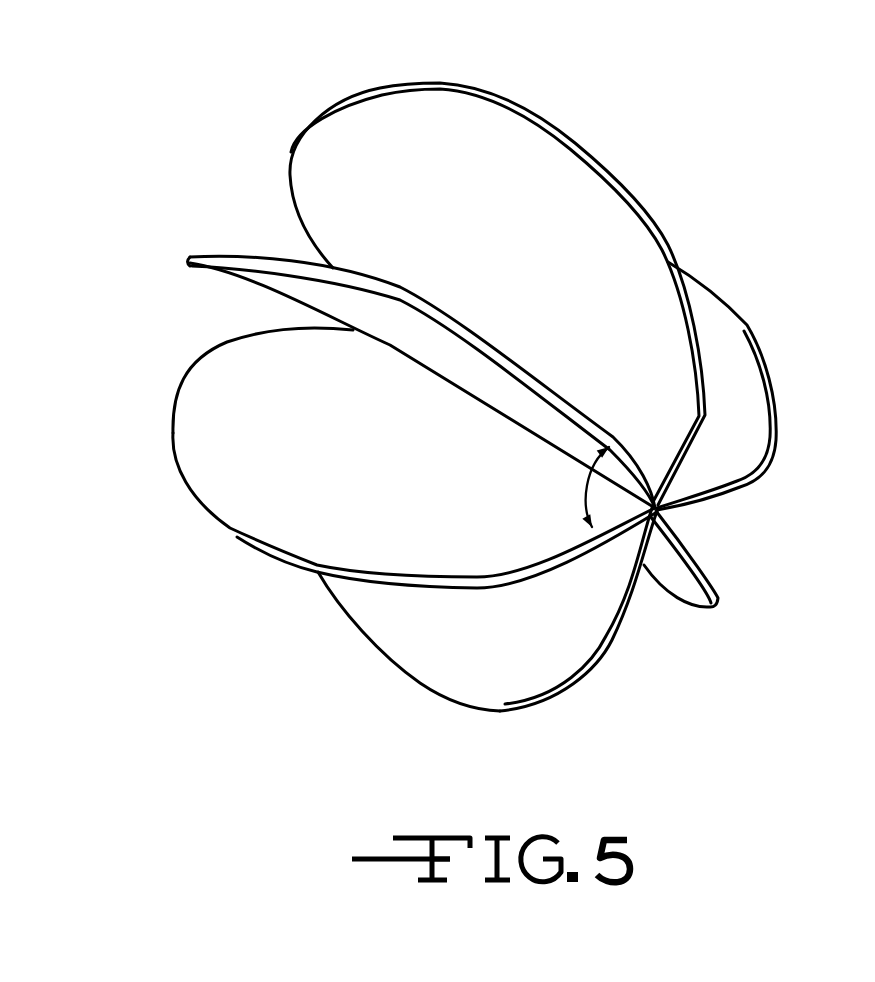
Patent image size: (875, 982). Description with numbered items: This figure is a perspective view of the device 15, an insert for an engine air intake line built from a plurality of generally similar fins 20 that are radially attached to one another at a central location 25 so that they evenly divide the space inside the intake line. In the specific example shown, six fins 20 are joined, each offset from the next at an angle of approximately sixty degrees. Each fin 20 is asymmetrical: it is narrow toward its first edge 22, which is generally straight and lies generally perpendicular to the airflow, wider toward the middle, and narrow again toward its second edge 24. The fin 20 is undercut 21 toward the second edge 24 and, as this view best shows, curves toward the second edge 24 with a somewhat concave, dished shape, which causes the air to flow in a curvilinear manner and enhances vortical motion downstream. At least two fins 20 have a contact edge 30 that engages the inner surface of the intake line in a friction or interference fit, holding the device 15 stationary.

The device 15 is at (800, 151).
The fin 20 is at (187, 482).
The undercut 21 is at (305, 236).
The first edge 22 is at (616, 624).
The second edge 24 is at (181, 381).
The central location 25 is at (662, 508).
The contact edge 30 is at (451, 85).